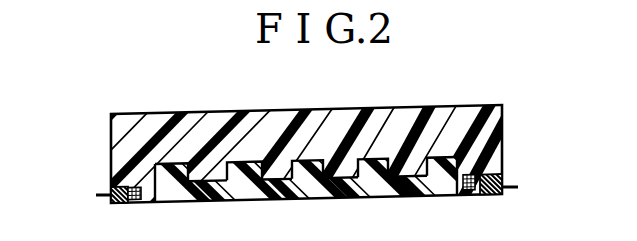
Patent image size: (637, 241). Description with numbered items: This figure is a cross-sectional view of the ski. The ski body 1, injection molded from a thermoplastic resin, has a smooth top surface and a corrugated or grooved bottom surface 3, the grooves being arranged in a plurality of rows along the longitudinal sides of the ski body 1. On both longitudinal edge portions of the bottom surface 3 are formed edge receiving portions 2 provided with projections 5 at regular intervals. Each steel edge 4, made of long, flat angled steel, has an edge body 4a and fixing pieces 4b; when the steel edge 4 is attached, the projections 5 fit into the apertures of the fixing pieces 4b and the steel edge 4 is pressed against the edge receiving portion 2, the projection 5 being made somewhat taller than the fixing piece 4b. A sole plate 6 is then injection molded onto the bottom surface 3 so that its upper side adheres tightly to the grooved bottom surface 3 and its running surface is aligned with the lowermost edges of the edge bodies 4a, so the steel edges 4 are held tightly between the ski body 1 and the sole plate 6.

The ski body 1 is at (380, 127).
The edge receiving portion 2 is at (109, 184).
The bottom surface 3 is at (280, 178).
The steel edge 4 is at (97, 195).
The edge body 4a is at (113, 204).
The fixing piece 4b is at (181, 190).
The projection 5 is at (142, 204).
The sole plate 6 is at (372, 187).